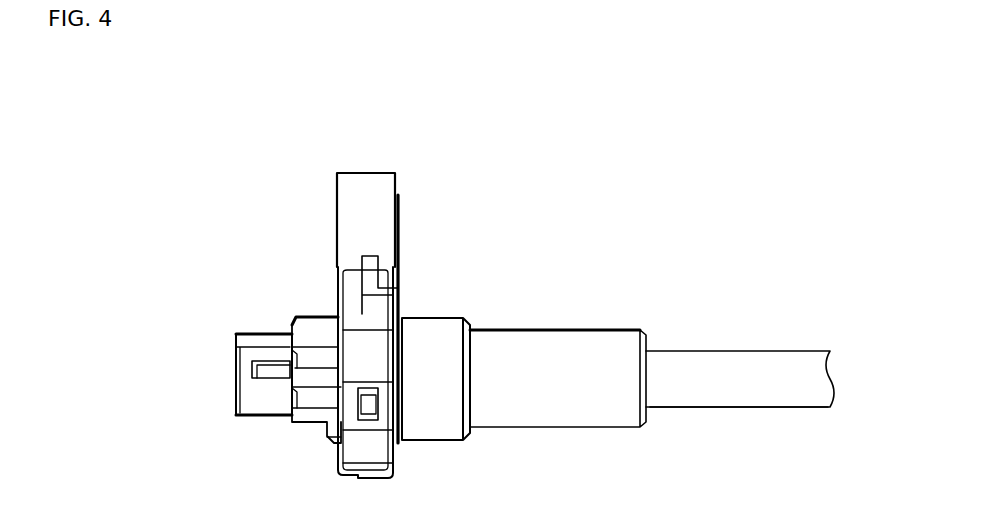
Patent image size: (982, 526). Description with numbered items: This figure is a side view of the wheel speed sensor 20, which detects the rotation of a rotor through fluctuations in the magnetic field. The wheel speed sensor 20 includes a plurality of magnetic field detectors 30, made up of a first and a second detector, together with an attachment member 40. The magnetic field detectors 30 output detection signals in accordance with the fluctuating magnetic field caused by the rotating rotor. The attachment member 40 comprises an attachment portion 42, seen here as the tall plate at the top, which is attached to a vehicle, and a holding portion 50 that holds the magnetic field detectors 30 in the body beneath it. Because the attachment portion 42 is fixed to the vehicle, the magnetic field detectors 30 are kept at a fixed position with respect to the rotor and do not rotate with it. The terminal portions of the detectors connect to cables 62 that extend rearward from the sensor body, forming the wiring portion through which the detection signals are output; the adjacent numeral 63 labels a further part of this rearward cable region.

The wheel speed sensor 20 is at (405, 94).
The magnetic field detectors 30 is at (292, 325).
The attachment member 40 is at (395, 475).
The attachment portion 42 is at (362, 172).
The holding portion 50 is at (377, 448).
The cables 62 is at (797, 350).
The sheath 63 is at (790, 390).